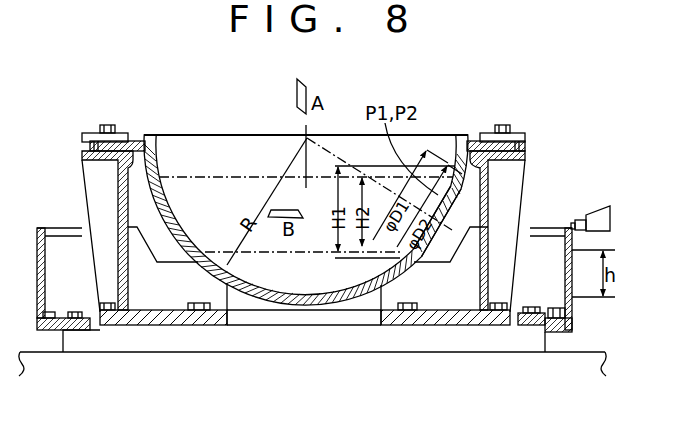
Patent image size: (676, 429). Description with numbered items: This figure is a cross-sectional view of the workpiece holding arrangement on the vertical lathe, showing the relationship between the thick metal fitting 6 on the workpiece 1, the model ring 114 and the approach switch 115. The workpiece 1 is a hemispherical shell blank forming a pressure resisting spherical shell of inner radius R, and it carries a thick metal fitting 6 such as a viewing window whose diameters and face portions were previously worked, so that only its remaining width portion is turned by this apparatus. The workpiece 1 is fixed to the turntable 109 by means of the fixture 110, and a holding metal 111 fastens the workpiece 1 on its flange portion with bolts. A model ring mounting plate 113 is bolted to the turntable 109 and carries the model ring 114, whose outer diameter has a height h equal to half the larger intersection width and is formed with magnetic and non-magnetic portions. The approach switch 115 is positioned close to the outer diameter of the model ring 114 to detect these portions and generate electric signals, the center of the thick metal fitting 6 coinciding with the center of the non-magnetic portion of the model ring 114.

The workpiece 1 is at (160, 157).
The thick metal fitting 6 is at (452, 170).
The turntable 109 is at (527, 340).
The fixture 110 is at (525, 152).
The holding metal 111 is at (514, 136).
The model ring mounting plate 113 is at (573, 328).
The model ring 114 is at (573, 320).
The approach switch 115 is at (578, 216).